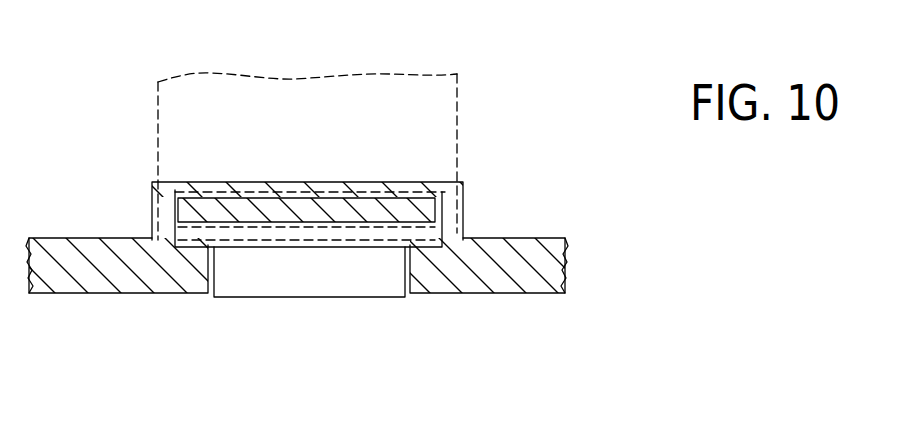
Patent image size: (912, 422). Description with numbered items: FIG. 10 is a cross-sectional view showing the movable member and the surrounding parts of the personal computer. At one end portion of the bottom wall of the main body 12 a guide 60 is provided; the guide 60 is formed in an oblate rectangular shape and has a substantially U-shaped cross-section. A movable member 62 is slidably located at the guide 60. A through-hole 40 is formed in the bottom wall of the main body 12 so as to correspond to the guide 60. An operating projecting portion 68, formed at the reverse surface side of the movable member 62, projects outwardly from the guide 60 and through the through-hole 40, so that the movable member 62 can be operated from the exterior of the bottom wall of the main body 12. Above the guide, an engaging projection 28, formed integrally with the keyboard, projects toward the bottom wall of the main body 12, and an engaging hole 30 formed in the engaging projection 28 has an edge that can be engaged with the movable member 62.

The main body 12 is at (495, 280).
The engaging projection 28 is at (158, 132).
The engaging hole 30 is at (150, 187).
The through-hole 40 is at (405, 267).
The guide 60 is at (463, 208).
The movable member 62 is at (348, 210).
The operating projecting portion 68 is at (268, 297).